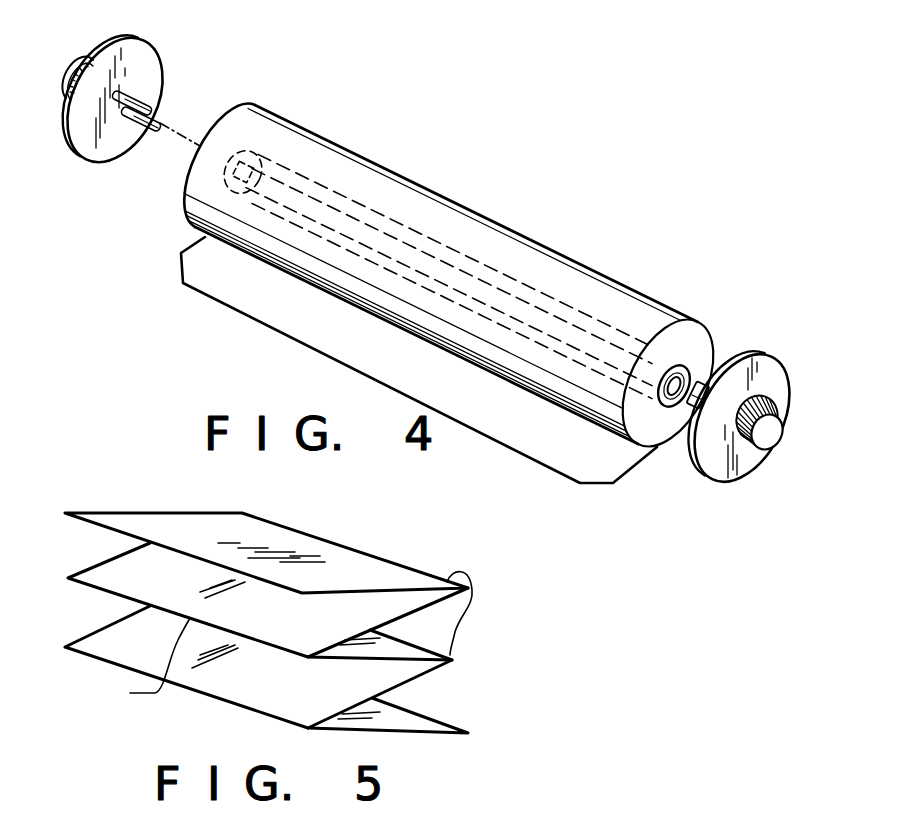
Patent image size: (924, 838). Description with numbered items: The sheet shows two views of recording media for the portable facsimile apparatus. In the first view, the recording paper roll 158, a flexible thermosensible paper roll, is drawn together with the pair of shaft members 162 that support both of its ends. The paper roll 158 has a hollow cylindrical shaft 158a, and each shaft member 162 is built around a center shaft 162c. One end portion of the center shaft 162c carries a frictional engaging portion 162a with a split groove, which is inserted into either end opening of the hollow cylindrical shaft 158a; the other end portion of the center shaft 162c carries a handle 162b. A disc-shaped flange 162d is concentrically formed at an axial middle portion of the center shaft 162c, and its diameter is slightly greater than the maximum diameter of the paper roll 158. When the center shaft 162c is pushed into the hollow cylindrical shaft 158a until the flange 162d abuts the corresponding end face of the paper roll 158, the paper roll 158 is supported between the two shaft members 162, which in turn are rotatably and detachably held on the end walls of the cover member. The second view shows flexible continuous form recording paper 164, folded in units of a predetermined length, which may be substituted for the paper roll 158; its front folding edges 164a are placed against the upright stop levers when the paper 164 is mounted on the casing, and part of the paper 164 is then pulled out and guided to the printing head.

In FIG. 4, the recording paper roll 158 is at (483, 222).
In FIG. 4, the hollow cylindrical shaft 158a is at (684, 364).
In FIG. 4, the shaft member 162 is at (73, 60).
In FIG. 4, the frictional engaging portion 162a is at (147, 97).
In FIG. 4, the handle 162b is at (67, 95).
In FIG. 4, the center shaft 162c is at (110, 148).
In FIG. 4, the disc-shaped flange 162d is at (137, 53).
In FIG. 5, the continuous form recording paper 164 is at (302, 555).
In FIG. 5, the front folding edge 164a is at (298, 642).